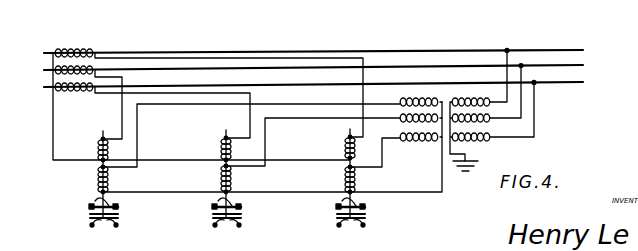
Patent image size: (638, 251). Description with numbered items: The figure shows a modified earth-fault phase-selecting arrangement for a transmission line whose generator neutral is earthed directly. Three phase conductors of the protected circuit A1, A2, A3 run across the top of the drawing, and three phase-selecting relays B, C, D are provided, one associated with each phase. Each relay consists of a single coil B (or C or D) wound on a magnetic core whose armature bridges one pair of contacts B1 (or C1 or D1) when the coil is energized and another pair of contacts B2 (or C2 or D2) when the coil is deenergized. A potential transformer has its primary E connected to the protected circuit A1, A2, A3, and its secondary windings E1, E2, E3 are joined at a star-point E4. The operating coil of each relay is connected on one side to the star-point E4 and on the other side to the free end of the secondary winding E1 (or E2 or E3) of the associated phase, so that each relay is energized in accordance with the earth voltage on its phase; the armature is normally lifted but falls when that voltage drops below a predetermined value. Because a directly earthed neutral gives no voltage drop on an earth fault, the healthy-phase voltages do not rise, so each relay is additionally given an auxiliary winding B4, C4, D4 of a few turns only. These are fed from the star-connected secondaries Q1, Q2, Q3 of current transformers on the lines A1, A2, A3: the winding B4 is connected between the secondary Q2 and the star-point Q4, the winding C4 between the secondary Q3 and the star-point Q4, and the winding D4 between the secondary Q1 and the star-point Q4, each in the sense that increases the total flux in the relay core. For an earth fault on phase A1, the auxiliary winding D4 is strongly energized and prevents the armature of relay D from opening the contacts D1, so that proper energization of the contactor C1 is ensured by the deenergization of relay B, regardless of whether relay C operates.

The phase of the protected circuit A1 is at (538, 16).
The phase of the protected circuit A2 is at (565, 63).
The phase of the protected circuit A3 is at (557, 84).
The current transformer secondary Q1 is at (78, 18).
The current transformer secondary Q2 is at (88, 65).
The current transformer secondary Q3 is at (75, 90).
The star-point of the current transformer secondaries Q4 is at (53, 137).
The auxiliary winding of relay B B4 is at (100, 142).
The phase-selecting relay B is at (98, 182).
The contacts of relay B B1 is at (100, 204).
The contacts of relay B B2 is at (105, 240).
The auxiliary winding of relay C C4 is at (222, 145).
The phase-selecting relay C is at (221, 182).
The contacts of relay C C1 is at (220, 205).
The contacts of relay C C2 is at (222, 240).
The auxiliary winding of relay D D4 is at (345, 147).
The phase-selecting relay D is at (345, 178).
The contacts of relay D D1 is at (344, 205).
The contacts of relay D D2 is at (341, 240).
The potential transformer secondary winding E1 is at (423, 100).
The potential transformer secondary winding E2 is at (413, 120).
The potential transformer secondary winding E3 is at (414, 141).
The star-point of the potential transformer secondary E4 is at (443, 186).
The potential transformer primary E is at (477, 132).